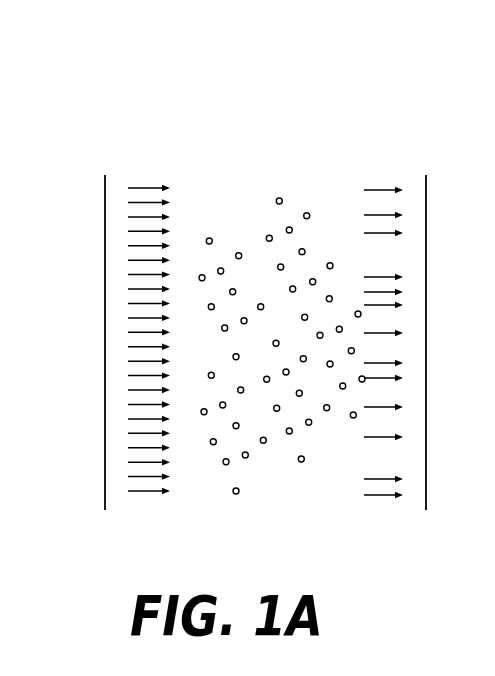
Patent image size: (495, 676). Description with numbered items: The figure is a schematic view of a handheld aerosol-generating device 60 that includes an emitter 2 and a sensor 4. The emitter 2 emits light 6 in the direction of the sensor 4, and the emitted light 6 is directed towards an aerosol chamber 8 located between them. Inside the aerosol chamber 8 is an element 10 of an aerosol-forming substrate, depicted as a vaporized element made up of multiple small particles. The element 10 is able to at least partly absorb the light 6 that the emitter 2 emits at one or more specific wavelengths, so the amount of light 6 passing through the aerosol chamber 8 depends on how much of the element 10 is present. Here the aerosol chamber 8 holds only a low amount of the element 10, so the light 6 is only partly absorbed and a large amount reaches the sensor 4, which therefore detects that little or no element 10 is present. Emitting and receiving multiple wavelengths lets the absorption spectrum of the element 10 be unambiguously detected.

The handheld aerosol-generating device 60 is at (223, 102).
The emitter 2 is at (104, 247).
The sensor 4 is at (426, 370).
The light 6 is at (144, 167).
The aerosol chamber 8 is at (274, 167).
The element 10 is at (301, 462).